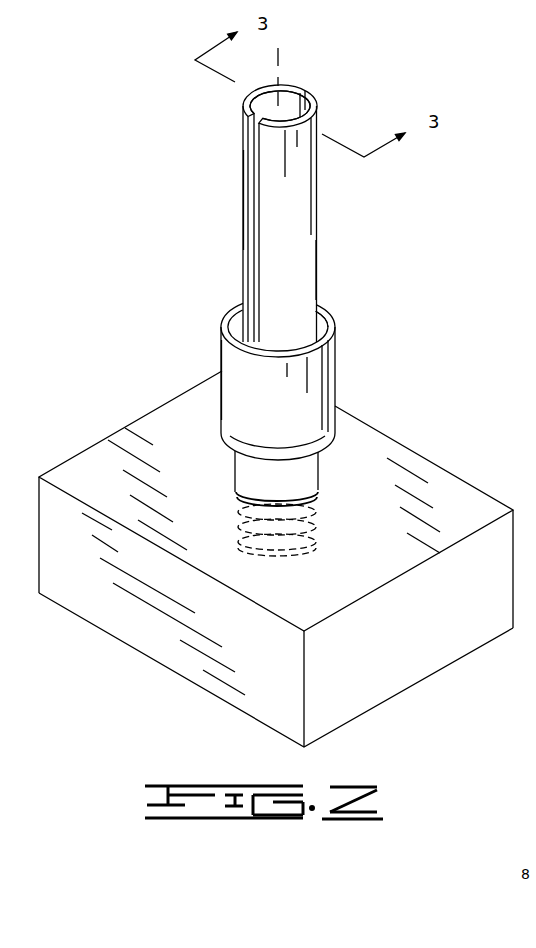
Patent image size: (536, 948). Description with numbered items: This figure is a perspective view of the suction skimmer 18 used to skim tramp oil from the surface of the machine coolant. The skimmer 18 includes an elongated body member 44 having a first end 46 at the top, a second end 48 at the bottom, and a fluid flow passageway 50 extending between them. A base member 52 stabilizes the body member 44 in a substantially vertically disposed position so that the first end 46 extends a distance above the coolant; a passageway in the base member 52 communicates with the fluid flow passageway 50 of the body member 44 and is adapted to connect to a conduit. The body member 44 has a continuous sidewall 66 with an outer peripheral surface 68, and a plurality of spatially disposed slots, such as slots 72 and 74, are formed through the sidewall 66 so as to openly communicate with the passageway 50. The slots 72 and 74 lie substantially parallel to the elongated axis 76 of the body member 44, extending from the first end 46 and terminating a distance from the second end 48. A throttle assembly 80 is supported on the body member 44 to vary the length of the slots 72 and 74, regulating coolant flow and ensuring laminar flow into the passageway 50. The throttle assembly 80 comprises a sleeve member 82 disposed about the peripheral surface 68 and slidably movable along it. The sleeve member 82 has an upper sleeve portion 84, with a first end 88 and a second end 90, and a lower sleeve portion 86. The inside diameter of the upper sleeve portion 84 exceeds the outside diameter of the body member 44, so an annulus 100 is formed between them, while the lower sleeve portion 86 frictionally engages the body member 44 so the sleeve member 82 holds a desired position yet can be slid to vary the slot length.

The suction skimmer 18 is at (348, 240).
The elongated body member 44 is at (316, 213).
The first end 46 is at (305, 120).
The second end 48 is at (318, 518).
The fluid flow passageway 50 is at (289, 102).
The base member 52 is at (460, 478).
The continuous sidewall 66 is at (305, 287).
The outer peripheral surface 68 is at (243, 198).
The slot 72 is at (258, 150).
The slot 74 is at (301, 97).
The elongated axis 76 is at (283, 64).
The throttle assembly 80 is at (213, 402).
The sleeve member 82 is at (338, 390).
The upper sleeve portion 84 is at (325, 358).
The lower sleeve portion 86 is at (243, 473).
The first end 88 is at (228, 345).
The second end 90 is at (227, 435).
The annulus 100 is at (330, 318).